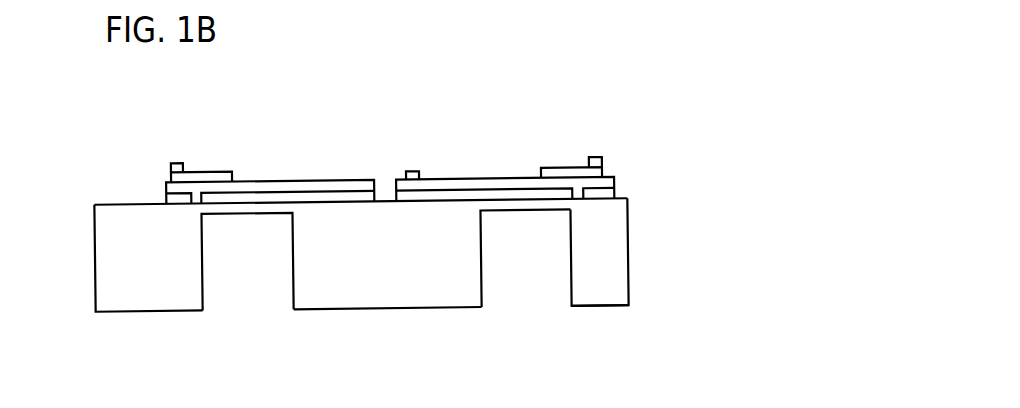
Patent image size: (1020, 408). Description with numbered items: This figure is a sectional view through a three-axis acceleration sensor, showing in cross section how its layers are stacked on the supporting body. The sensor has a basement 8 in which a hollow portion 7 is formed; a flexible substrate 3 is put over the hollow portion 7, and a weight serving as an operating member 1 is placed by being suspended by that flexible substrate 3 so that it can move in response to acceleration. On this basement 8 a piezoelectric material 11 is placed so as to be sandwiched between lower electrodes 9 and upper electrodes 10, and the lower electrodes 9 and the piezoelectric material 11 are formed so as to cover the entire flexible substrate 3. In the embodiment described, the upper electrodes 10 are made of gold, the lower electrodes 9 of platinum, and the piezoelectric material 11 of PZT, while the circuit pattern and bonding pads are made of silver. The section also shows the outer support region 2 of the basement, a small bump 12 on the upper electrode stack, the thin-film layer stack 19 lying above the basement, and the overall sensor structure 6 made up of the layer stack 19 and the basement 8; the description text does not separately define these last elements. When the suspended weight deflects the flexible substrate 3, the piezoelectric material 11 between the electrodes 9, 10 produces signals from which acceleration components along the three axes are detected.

The operating member 1 is at (427, 283).
The support frame portion 2 is at (628, 258).
The flexible substrate 3 is at (245, 211).
The sensor device 6 is at (41, 322).
The hollow portion 7 is at (533, 275).
The basement 8 is at (86, 313).
The lower electrodes 9 is at (460, 193).
The upper electrodes 10 is at (408, 172).
The piezoelectric material 11 is at (166, 188).
The bump 12 is at (598, 162).
The layer stack 19 is at (86, 162).